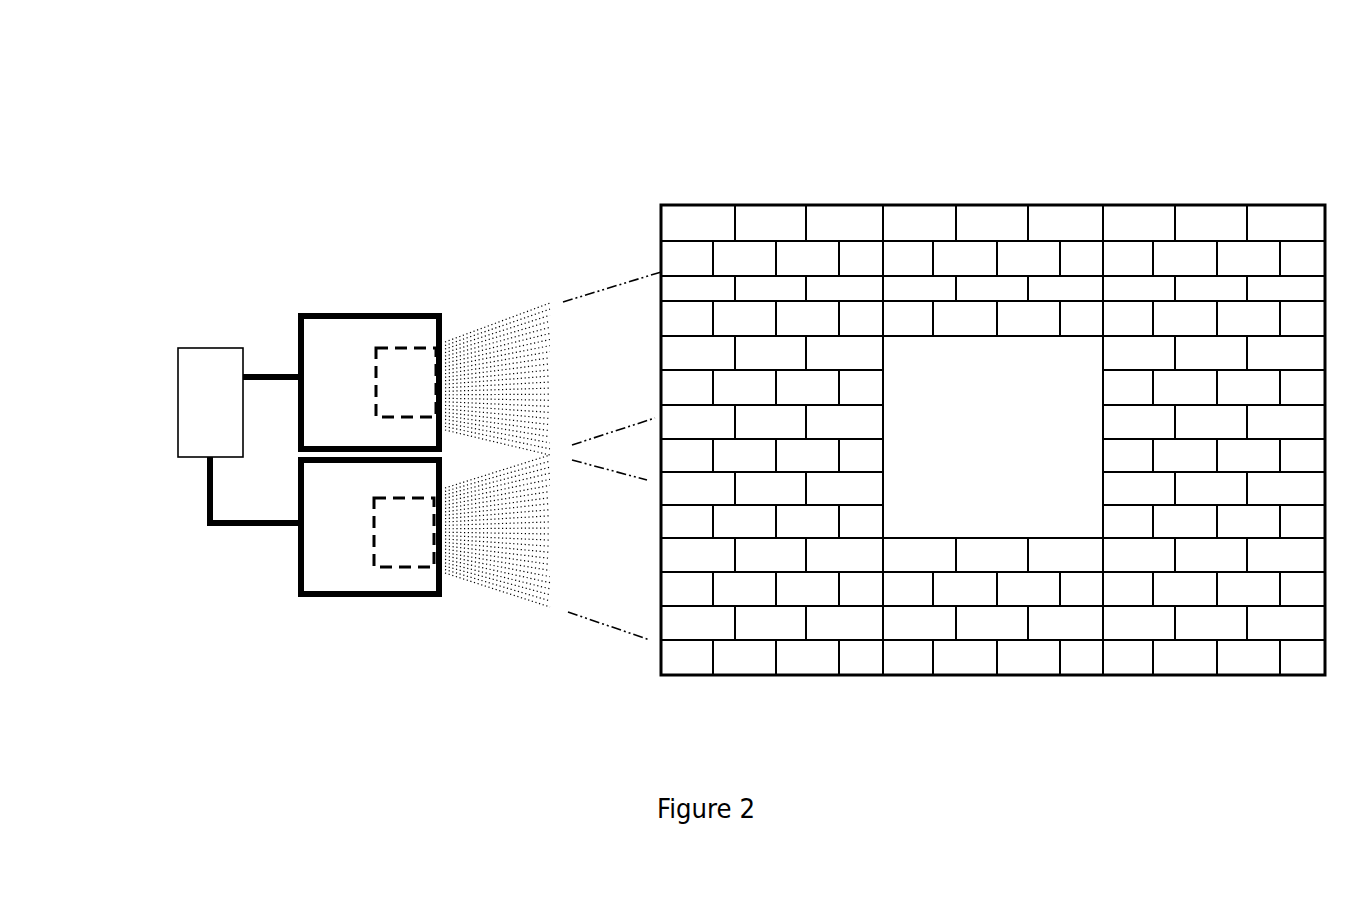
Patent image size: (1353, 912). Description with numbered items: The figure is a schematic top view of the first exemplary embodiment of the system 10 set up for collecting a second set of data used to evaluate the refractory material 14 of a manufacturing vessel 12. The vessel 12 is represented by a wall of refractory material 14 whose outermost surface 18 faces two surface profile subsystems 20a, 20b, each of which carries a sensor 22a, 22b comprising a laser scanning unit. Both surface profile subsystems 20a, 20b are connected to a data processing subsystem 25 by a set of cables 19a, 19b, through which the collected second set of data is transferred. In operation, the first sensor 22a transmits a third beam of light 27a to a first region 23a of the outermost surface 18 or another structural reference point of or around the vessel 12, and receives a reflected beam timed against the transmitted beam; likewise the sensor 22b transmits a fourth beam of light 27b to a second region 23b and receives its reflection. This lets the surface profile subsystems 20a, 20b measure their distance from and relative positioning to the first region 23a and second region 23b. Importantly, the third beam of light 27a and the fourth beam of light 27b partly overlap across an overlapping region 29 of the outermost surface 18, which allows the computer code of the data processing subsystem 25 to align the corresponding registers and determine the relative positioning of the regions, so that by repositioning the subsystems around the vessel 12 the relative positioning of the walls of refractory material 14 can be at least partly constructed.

The system 10 is at (525, 128).
The manufacturing vessel 12 is at (998, 190).
The refractory material 14 is at (772, 220).
The outermost surface 18 is at (657, 236).
The cable 19a is at (281, 367).
The cable 19b is at (258, 533).
The surface profile subsystem 20a is at (352, 305).
The surface profile subsystem 20b is at (322, 598).
The first sensor 22a is at (410, 347).
The sensor 22b is at (403, 572).
The first region 23a is at (657, 346).
The second region 23b is at (655, 547).
The data processing subsystem 25 is at (192, 345).
The third beam of light 27a is at (507, 313).
The fourth beam of light 27b is at (517, 602).
The overlapping region 29 is at (658, 447).